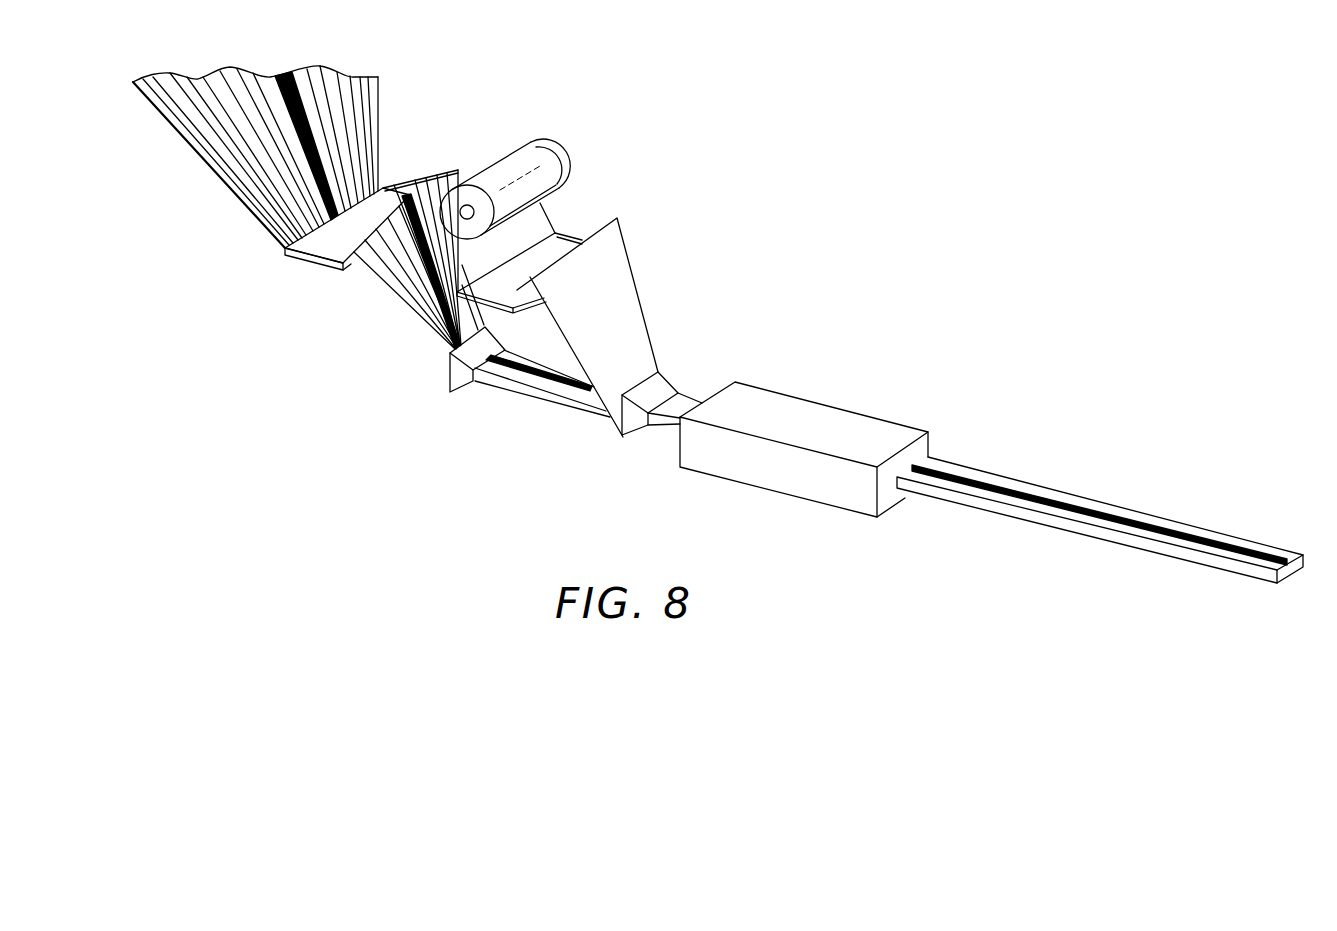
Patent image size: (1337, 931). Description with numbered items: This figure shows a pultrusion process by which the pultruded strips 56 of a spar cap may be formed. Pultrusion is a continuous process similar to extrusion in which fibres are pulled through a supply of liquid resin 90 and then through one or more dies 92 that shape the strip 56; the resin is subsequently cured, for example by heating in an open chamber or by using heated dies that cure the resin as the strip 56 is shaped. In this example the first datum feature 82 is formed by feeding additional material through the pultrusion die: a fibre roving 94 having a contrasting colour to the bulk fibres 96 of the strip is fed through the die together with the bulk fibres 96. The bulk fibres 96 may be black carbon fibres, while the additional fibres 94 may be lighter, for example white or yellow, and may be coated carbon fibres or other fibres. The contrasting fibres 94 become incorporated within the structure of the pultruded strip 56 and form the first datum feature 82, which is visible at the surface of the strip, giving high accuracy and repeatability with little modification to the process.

The pultruded strip 56 is at (1100, 545).
The first datum feature 82 is at (1253, 550).
The supply of liquid resin 90 is at (392, 199).
The die 92 is at (895, 432).
The fibre roving 94 is at (306, 122).
The bulk fibres 96 is at (283, 157).